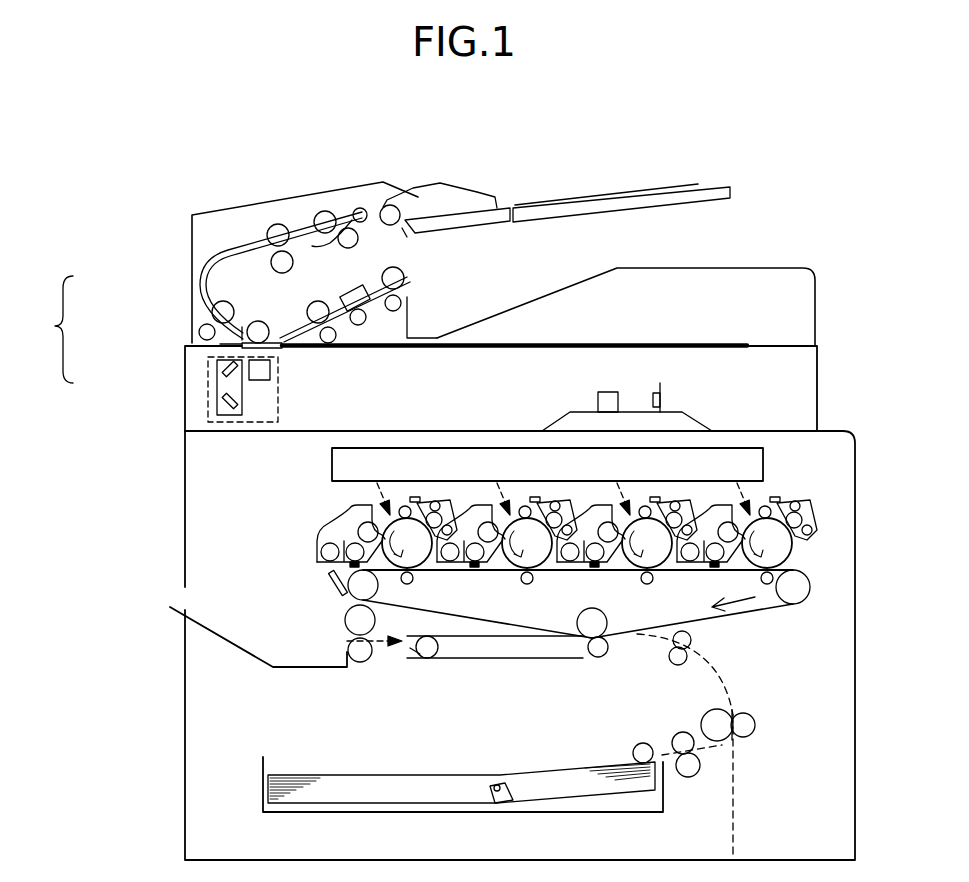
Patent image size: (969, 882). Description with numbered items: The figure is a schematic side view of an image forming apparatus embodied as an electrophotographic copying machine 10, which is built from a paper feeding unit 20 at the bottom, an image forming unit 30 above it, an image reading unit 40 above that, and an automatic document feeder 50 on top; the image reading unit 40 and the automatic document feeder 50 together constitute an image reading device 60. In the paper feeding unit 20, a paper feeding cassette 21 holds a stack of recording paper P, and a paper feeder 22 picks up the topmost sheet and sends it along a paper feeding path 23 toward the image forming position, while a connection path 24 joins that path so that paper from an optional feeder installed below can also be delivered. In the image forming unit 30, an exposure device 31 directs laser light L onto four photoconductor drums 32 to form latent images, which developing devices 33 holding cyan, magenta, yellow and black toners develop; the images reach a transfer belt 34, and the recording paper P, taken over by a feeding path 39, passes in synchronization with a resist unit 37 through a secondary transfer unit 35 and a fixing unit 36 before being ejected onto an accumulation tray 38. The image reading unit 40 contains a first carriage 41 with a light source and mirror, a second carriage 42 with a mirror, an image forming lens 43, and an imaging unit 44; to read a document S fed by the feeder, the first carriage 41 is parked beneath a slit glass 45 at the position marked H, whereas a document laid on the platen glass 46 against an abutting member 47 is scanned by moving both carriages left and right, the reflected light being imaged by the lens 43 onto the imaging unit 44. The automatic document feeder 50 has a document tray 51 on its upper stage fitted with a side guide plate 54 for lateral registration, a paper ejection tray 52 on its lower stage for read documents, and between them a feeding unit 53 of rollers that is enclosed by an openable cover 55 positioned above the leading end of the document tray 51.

The copying machine 10 is at (797, 160).
The paper feeding unit 20 is at (427, 779).
The paper feeding cassette 21 is at (263, 786).
The paper feeder 22 is at (695, 795).
The paper feeding path 23 is at (733, 695).
The connection path 24 is at (733, 790).
The image forming unit 30 is at (497, 583).
The exposure device 31 is at (332, 465).
The photoconductor drums 32 is at (420, 560).
The developing devices 33 is at (348, 505).
The transfer belt 34 is at (487, 618).
The secondary transfer unit 35 is at (588, 668).
The fixing unit 36 is at (334, 611).
The resist unit 37 is at (656, 672).
The accumulation tray 38 is at (228, 645).
The feeding path 39 is at (390, 648).
The image reading unit 40 is at (174, 388).
The first carriage 41 is at (270, 370).
The second carriage 42 is at (215, 385).
The image forming lens 43 is at (598, 398).
The imaging unit 44 is at (662, 395).
The slit glass 45 is at (268, 340).
The platen glass 46 is at (628, 343).
The abutting member 47 is at (285, 348).
The automatic document feeder 50 is at (450, 227).
The document tray 51 is at (726, 168).
The paper ejection tray 52 is at (560, 287).
The feeding unit 53 is at (220, 235).
The side guide plate 54 is at (467, 185).
The cover 55 is at (300, 190).
The image reading device 60 is at (50, 329).
The document S is at (643, 188).
The recording paper P is at (548, 773).
The position of first carriage below slit glass H is at (280, 406).
The laser light L is at (742, 492).